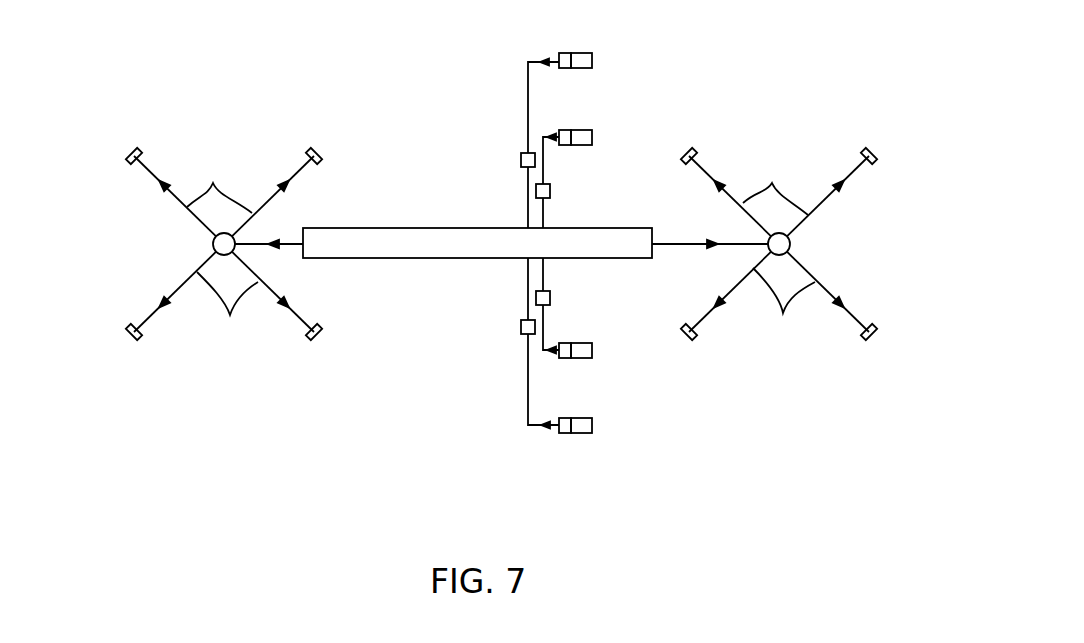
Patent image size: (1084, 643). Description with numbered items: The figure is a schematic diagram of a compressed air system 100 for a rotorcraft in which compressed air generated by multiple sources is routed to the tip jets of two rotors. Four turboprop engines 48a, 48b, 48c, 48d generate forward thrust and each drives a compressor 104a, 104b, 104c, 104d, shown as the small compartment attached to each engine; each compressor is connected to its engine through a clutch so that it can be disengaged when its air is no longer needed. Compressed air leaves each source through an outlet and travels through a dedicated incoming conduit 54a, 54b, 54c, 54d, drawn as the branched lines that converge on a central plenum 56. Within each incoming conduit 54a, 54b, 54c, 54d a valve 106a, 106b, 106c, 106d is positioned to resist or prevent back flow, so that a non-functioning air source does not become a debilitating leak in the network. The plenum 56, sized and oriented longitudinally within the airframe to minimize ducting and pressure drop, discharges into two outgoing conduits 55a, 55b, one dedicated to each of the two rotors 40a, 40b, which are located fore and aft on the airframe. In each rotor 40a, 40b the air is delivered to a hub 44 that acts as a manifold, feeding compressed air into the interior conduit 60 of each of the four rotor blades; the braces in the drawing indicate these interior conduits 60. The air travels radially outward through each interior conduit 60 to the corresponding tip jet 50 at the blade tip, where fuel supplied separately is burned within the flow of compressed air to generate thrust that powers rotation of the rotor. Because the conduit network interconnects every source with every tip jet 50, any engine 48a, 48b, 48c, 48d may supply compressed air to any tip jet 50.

The compressed air system 100 is at (381, 70).
The rotor 40a is at (858, 250).
The rotor 40b is at (152, 239).
The hub 44 is at (214, 250).
The tip jet 50 is at (141, 150).
The interior conduit 60 is at (501, 249).
The plenum 56 is at (353, 228).
The outgoing conduit 55a is at (672, 246).
The outgoing conduit 55b is at (287, 248).
The incoming conduit 54a is at (528, 397).
The incoming conduit 54b is at (543, 330).
The incoming conduit 54c is at (543, 215).
The incoming conduit 54d is at (527, 84).
The valve 106a is at (521, 327).
The valve 106b is at (550, 297).
The valve 106c is at (550, 191).
The valve 106d is at (521, 160).
The engine 48a is at (587, 433).
The engine 48b is at (592, 350).
The engine 48c is at (592, 138).
The engine 48d is at (592, 62).
The compressor 104a is at (563, 433).
The compressor 104b is at (565, 358).
The compressor 104c is at (567, 130).
The compressor 104d is at (567, 53).